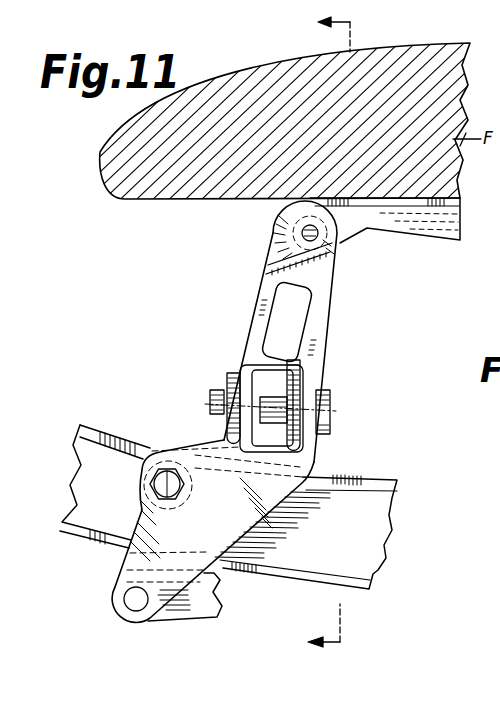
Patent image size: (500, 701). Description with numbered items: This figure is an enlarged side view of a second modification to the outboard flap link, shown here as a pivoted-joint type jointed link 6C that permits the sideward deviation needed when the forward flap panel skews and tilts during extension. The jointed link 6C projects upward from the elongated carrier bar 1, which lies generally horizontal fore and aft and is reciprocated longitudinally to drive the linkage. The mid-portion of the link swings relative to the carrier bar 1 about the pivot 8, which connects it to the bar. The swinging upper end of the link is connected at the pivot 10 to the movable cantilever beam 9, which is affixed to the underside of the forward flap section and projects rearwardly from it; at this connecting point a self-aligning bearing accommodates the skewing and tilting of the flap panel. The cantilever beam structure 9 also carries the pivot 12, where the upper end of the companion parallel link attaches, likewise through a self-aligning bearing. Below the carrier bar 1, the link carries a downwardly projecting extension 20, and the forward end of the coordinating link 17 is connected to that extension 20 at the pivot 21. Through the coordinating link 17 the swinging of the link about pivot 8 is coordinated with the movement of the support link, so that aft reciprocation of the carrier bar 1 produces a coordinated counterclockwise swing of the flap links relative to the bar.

The carrier bar 1 is at (371, 482).
The jointed link 6C is at (322, 328).
The pivot 8 is at (166, 468).
The cantilever beam 9 is at (420, 222).
The pivot 10 is at (313, 237).
The pivot 12 is at (309, 337).
The coordinating link 17 is at (192, 613).
The extension 20 is at (127, 535).
The pivot 21 is at (133, 604).